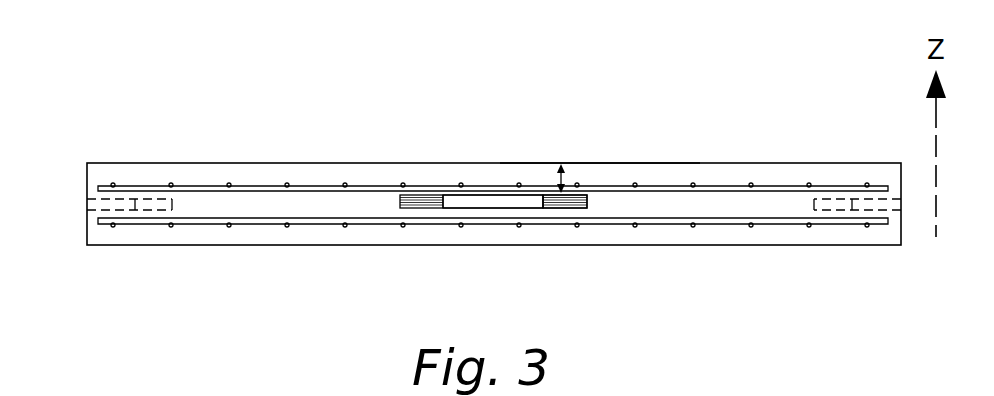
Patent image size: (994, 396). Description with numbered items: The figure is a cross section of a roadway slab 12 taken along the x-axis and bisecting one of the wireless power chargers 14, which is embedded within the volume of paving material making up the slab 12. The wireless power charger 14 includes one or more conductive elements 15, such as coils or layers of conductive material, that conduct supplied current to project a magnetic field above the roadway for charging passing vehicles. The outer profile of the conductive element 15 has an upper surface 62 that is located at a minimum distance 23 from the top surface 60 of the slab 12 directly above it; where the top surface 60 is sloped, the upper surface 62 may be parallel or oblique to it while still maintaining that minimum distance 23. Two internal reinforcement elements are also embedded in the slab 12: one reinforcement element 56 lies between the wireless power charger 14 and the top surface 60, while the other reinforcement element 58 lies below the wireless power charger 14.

The slab 12 is at (719, 104).
The wireless charger 14 is at (378, 188).
The conductive element 15 is at (561, 208).
The minimum distance 23 is at (561, 180).
The internal reinforcement element 56 is at (98, 188).
The reinforcement element 58 is at (98, 222).
The top surface 60 is at (608, 164).
The upper surface 62 is at (448, 195).